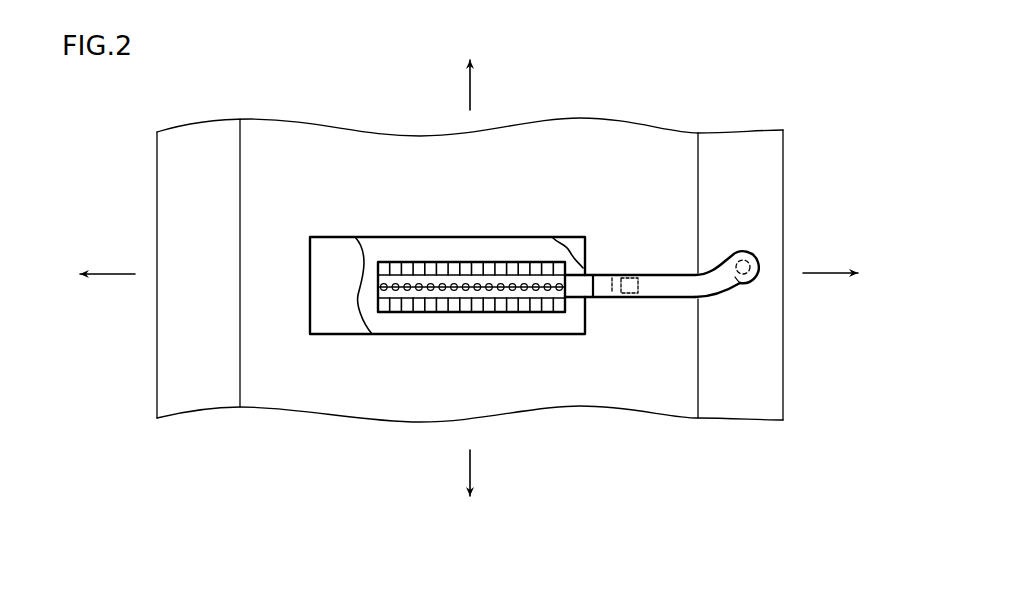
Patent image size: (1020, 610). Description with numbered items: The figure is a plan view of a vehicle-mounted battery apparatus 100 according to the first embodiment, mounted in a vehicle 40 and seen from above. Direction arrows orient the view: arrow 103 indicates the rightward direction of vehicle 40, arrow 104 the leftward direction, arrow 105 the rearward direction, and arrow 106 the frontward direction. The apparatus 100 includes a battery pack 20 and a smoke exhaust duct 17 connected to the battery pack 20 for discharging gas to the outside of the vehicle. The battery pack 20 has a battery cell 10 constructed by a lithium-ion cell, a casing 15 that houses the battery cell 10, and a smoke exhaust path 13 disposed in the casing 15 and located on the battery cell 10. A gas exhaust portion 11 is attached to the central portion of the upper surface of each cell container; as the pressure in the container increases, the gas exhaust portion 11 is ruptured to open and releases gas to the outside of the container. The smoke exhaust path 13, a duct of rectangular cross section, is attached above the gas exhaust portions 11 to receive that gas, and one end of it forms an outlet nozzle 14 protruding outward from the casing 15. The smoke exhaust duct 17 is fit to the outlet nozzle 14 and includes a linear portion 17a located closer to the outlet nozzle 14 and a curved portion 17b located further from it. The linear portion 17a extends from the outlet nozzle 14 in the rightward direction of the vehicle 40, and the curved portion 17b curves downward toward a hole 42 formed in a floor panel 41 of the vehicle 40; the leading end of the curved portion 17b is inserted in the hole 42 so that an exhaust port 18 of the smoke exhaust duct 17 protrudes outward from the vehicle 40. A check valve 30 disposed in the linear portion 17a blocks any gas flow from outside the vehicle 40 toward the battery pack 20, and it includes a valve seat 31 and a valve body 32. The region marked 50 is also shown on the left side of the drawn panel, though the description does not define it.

The battery cell 10 is at (468, 276).
The gas exhaust portion 11 is at (386, 262).
The smoke exhaust path 13 is at (590, 298).
The outlet nozzle 14 is at (590, 274).
The casing 15 is at (430, 334).
The smoke exhaust duct 17 is at (685, 284).
The linear portion 17a is at (605, 298).
The curved portion 17b is at (727, 293).
The exhaust port 18 is at (757, 257).
The battery pack 20 is at (333, 339).
The check valve 30 is at (636, 304).
The valve seat 31 is at (656, 276).
The valve body 32 is at (630, 276).
The vehicle 40 is at (788, 157).
The floor panel 41 is at (738, 155).
The hole 42 is at (757, 285).
The left region of panel 50 is at (280, 136).
The vehicle-mounted battery apparatus 100 is at (524, 216).
The arrow indicating rightward direction 103 is at (827, 270).
The arrow indicating leftward direction 104 is at (115, 270).
The arrow indicating rearward direction 105 is at (473, 468).
The arrow indicating frontward direction 106 is at (473, 92).